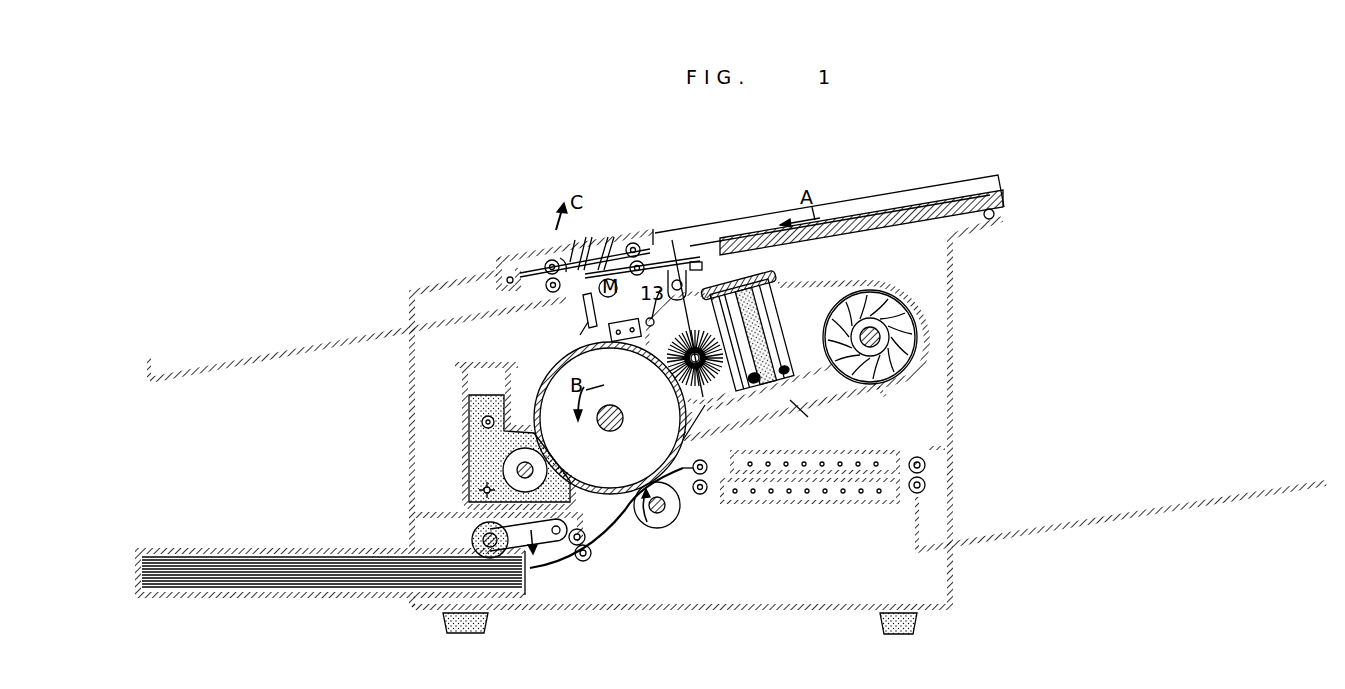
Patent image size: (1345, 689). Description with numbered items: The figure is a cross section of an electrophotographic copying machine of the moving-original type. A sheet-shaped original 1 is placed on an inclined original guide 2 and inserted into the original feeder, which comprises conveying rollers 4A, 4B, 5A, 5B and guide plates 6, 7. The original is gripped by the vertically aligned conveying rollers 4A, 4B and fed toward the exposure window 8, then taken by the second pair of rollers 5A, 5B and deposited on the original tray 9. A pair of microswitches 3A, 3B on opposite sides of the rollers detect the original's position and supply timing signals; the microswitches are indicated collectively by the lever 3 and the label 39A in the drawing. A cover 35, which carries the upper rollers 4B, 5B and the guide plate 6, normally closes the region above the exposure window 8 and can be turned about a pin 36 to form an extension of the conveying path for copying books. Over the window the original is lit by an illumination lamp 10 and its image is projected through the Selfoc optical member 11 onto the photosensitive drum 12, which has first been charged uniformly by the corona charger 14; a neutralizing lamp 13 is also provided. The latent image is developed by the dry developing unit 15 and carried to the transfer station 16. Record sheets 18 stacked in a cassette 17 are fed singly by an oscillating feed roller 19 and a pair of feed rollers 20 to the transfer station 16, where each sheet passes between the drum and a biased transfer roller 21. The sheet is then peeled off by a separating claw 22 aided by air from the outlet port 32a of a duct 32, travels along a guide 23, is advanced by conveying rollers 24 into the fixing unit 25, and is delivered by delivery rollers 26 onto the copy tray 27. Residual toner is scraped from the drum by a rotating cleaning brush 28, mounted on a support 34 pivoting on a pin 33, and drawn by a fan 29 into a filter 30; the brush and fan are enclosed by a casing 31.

The original 1 is at (848, 216).
The original guide 2 is at (918, 205).
The lever 3 is at (660, 318).
The microswitch 3A is at (710, 273).
The microswitch 3B is at (626, 318).
The conveying roller 4A is at (635, 243).
The conveying roller 4B is at (633, 262).
The conveying roller 5A is at (548, 289).
The conveying roller 5B is at (546, 262).
The guide plate 6 is at (584, 243).
The guide plate 7 is at (604, 236).
The exposure window 8 is at (562, 257).
The original tray 9 is at (326, 352).
The illumination lamp 10 is at (584, 306).
The Selfoc optical member 11 is at (580, 336).
The photosensitive drum 12 is at (562, 368).
The neutralizing lamp 13 is at (653, 308).
The corona charger 14 is at (618, 346).
The developing unit 15 is at (463, 450).
The transfer station 16 is at (630, 522).
The cassette 17 is at (288, 550).
The record sheets 18 is at (328, 556).
The feed roller 19 is at (470, 538).
The feed rollers 20 is at (592, 545).
The transfer roller 21 is at (670, 520).
The separating claw 22 is at (672, 465).
The guide 23 is at (707, 493).
The conveying rollers 24 is at (712, 492).
The fixing unit 25 is at (858, 455).
The delivery rollers 26 is at (926, 486).
The copy tray 27 is at (1070, 520).
The cleaning brush 28 is at (665, 365).
The fan 29 is at (846, 310).
The filter 30 is at (780, 332).
The casing 31 is at (905, 290).
The duct 32 is at (808, 410).
The outlet port 32a is at (683, 440).
The pin 33 is at (677, 268).
The support 34 is at (690, 262).
The cover 35 is at (497, 243).
The pin 36 is at (506, 290).
The guide member 39A is at (566, 252).